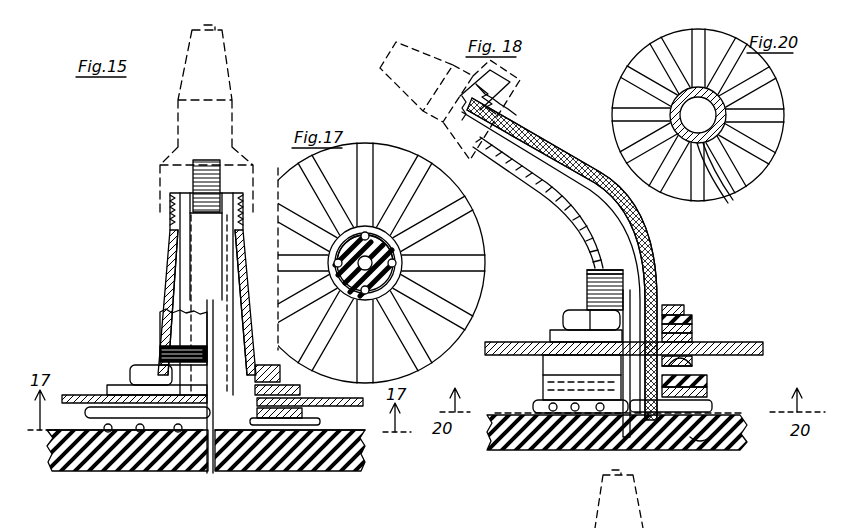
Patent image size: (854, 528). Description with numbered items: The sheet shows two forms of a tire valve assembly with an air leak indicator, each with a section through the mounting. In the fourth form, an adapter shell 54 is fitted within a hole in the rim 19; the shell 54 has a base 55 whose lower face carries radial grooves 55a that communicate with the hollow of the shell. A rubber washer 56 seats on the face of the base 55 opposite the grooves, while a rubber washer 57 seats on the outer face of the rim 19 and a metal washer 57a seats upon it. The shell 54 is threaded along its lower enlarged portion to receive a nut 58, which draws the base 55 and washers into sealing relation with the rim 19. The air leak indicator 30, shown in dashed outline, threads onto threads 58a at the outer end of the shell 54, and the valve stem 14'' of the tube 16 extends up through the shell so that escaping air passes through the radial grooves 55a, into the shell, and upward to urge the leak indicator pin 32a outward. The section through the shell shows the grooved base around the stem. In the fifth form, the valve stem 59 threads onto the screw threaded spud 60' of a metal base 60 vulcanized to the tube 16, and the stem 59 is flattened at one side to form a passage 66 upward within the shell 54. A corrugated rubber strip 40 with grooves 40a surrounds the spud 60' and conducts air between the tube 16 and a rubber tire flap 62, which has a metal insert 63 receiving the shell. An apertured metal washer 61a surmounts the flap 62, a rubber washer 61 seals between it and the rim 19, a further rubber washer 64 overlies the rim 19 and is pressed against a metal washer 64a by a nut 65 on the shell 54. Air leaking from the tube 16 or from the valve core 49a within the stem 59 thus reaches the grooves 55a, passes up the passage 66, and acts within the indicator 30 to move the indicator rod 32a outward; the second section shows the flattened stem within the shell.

In FIG. 15, the valve stem 14'' is at (180, 333).
In FIG. 17, the valve stem 14'' is at (422, 253).
In FIG. 18, the valve stem 14'' is at (538, 202).
In FIG. 15, the tube 16 is at (228, 460).
In FIG. 18, the tube 16 is at (745, 450).
In FIG. 15, the rim 19 is at (100, 395).
In FIG. 18, the rim 19 is at (750, 342).
In FIG. 15, the air leak indicator 30 is at (234, 89).
In FIG. 18, the air leak indicator 30 is at (525, 100).
In FIG. 18, the leak indicator pin 32a is at (382, 62).
In FIG. 18, the corrugated rubber strip 40 is at (718, 448).
In FIG. 18, the grooves 40a is at (538, 402).
In FIG. 15, the valve core 49a is at (214, 162).
In FIG. 18, the valve core 49a is at (482, 100).
In FIG. 15, the adapter shell 54 is at (166, 259).
In FIG. 18, the adapter shell 54 is at (652, 250).
In FIG. 15, the base 55 is at (150, 440).
In FIG. 17, the base 55 is at (478, 252).
In FIG. 18, the base 55 is at (543, 370).
In FIG. 20, the base 55 is at (778, 140).
In FIG. 15, the radial grooves 55a is at (108, 432).
In FIG. 17, the radial grooves 55a is at (470, 288).
In FIG. 18, the radial grooves 55a is at (700, 408).
In FIG. 20, the radial grooves 55a is at (768, 157).
In FIG. 15, the rubber washer 56 is at (300, 420).
In FIG. 15, the rubber washer 57 is at (125, 385).
In FIG. 15, the metal washer 57a is at (290, 398).
In FIG. 15, the nut 58 is at (148, 365).
In FIG. 15, the threads 58a is at (170, 203).
In FIG. 18, the valve stem 59 is at (648, 270).
In FIG. 20, the valve stem 59 is at (729, 203).
In FIG. 18, the base 60 is at (676, 394).
In FIG. 18, the screw threaded spud 60' is at (644, 290).
In FIG. 18, the rubber washer 61 is at (700, 340).
In FIG. 18, the metal washer 61a is at (522, 342).
In FIG. 18, the rubber tire flap 62 is at (707, 382).
In FIG. 18, the metal insert 63 is at (695, 362).
In FIG. 18, the rubber washer 64 is at (692, 328).
In FIG. 18, the metal washer 64a is at (692, 318).
In FIG. 18, the nut 65 is at (684, 310).
In FIG. 20, the passage 66 is at (718, 115).